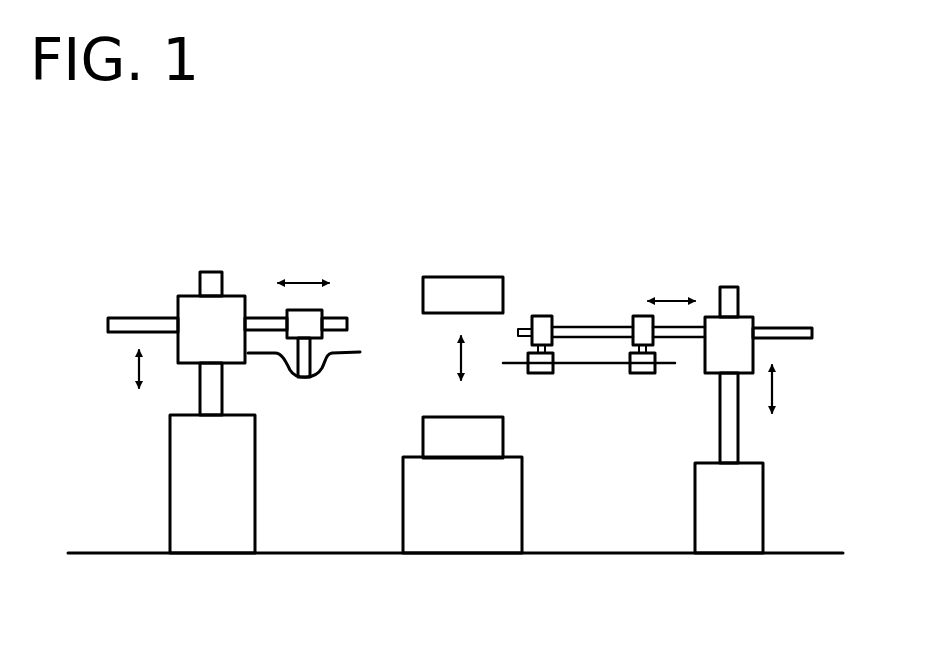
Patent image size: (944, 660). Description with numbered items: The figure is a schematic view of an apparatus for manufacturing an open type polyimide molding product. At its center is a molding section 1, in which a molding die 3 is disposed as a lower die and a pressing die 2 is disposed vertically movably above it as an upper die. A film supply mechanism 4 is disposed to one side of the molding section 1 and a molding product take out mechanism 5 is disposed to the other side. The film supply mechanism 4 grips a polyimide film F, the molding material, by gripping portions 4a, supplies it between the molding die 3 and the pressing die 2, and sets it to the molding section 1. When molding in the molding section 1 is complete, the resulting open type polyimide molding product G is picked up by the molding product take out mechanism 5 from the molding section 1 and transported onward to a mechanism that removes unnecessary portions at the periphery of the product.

The molding section 1 is at (472, 185).
The pressing die 2 is at (460, 289).
The molding die 3 is at (445, 427).
The film supply mechanism 4 is at (756, 315).
The gripping portions 4a is at (640, 373).
The molding product take out mechanism 5 is at (182, 292).
The polyimide film F is at (585, 362).
The open type polyimide molding product G is at (290, 378).